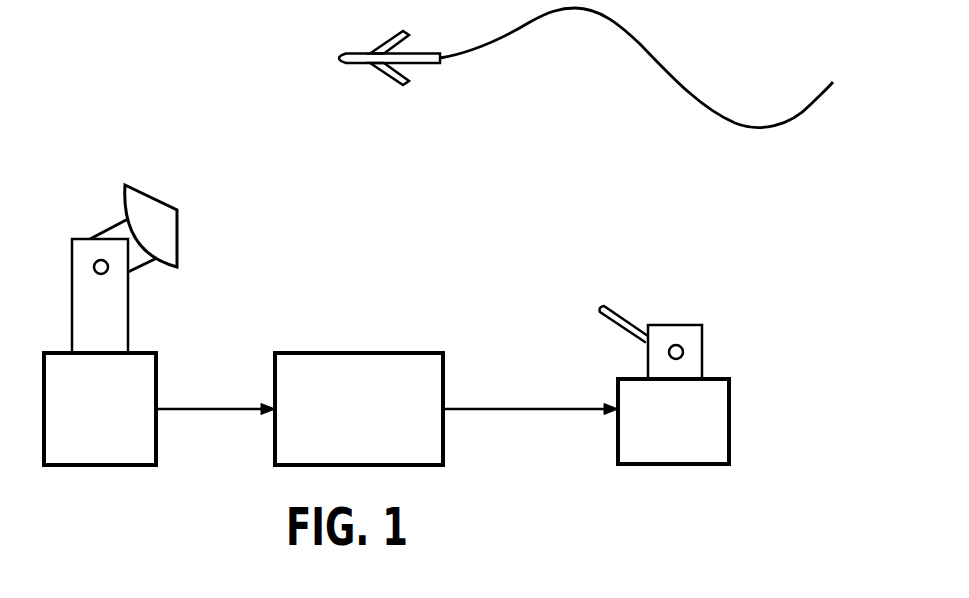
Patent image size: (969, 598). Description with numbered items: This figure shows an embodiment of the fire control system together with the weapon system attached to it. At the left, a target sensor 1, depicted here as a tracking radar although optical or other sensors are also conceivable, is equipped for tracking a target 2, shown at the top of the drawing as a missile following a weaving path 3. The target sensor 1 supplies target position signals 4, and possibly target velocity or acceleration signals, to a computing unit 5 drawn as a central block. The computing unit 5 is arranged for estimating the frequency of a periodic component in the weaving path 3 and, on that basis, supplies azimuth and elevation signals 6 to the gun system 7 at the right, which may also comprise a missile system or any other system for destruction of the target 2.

The target sensor 1 is at (125, 325).
The target 2 is at (389, 67).
The weaving path 3 is at (636, 67).
The target position signals 4 is at (215, 397).
The computing unit 5 is at (397, 363).
The azimuth and elevation signals 6 is at (530, 396).
The gun system 7 is at (665, 385).